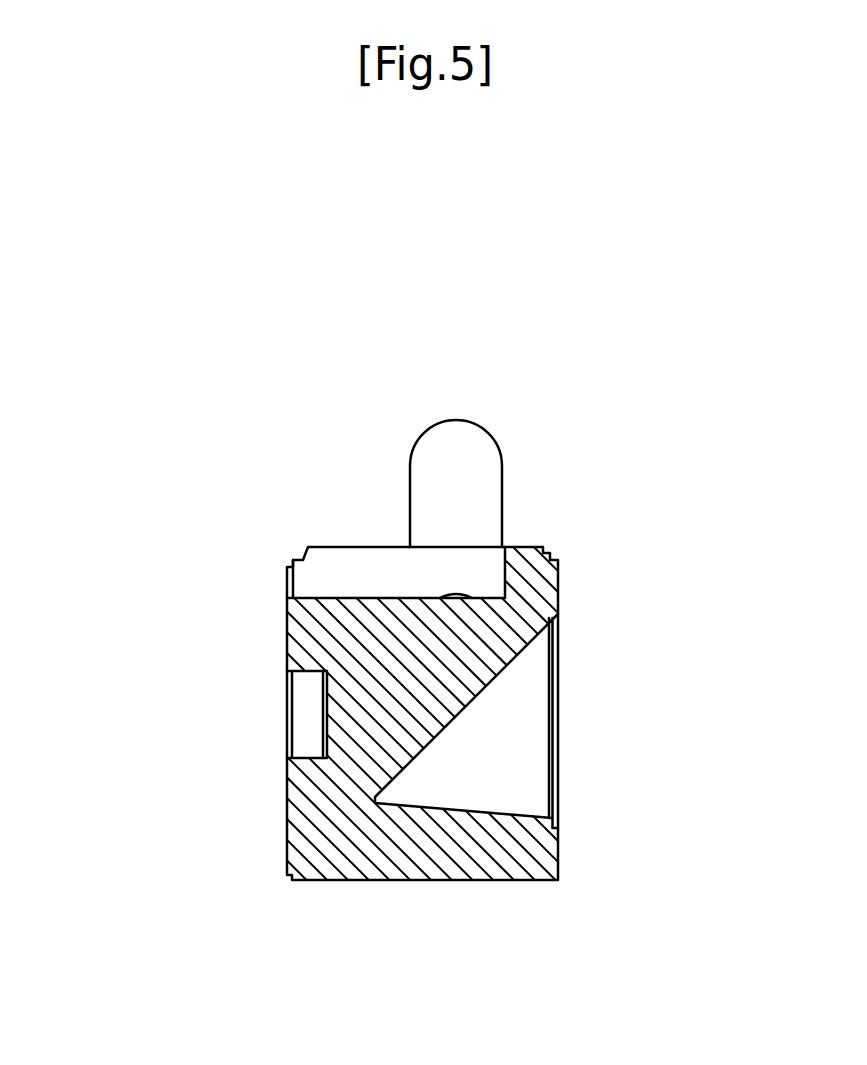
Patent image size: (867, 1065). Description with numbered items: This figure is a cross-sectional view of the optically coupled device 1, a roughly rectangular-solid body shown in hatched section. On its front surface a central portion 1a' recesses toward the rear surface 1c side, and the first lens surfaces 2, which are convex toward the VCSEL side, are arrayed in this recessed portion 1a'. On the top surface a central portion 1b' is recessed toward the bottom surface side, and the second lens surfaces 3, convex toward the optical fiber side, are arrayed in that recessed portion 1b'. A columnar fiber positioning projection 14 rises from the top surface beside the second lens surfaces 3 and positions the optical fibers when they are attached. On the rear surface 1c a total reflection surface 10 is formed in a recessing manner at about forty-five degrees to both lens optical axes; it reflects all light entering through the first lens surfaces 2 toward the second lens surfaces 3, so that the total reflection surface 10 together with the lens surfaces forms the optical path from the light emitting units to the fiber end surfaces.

The optically coupled device 1 is at (137, 298).
The fiber positioning projection 14 is at (430, 423).
The second lens surface 3 is at (455, 594).
The recessed portion of the top surface 1b' is at (444, 509).
The rear surface 1c is at (558, 589).
The recessed portion of the front surface 1a' is at (237, 699).
The first lens surface 2 is at (325, 714).
The total reflection surface 10 is at (470, 700).